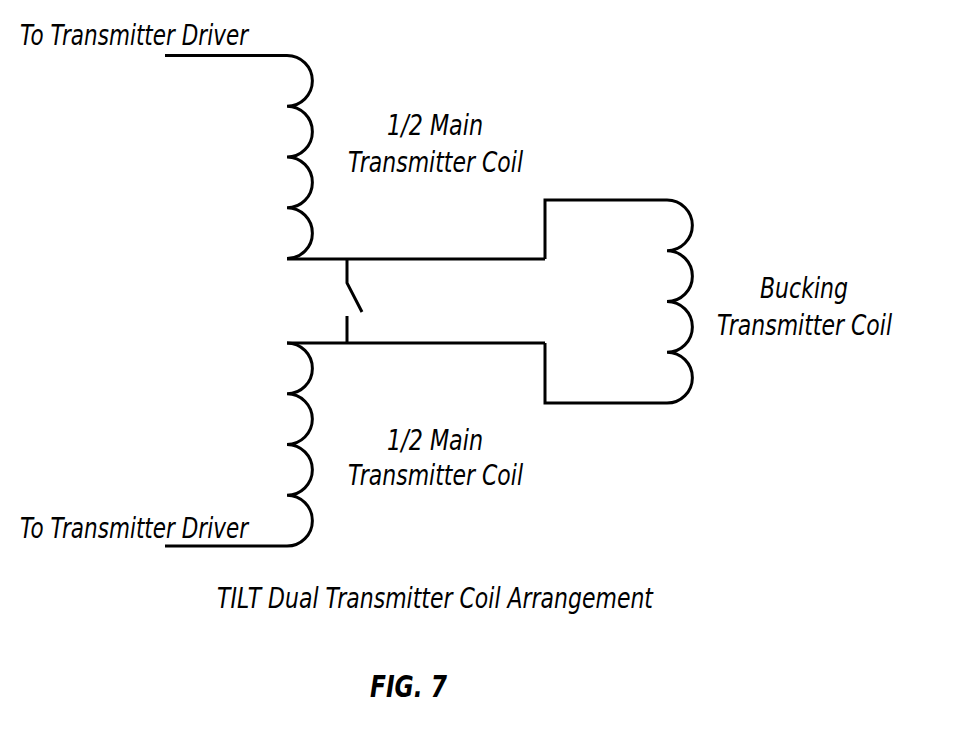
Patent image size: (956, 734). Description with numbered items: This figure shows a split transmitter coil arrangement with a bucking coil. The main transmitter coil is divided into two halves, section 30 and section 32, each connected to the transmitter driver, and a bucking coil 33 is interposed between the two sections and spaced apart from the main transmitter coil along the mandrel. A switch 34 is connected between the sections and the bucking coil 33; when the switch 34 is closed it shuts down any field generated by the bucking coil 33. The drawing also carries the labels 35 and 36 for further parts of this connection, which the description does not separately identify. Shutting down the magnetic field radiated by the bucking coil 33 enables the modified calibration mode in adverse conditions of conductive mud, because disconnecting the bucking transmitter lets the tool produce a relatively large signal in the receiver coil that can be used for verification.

The transmitter coil section 30 is at (315, 77).
The transmitter coil section 32 is at (315, 416).
The bucking coil 33 is at (693, 222).
The switch 34 is at (432, 259).
The lower connection line 35 is at (432, 343).
The switch 36 is at (358, 300).